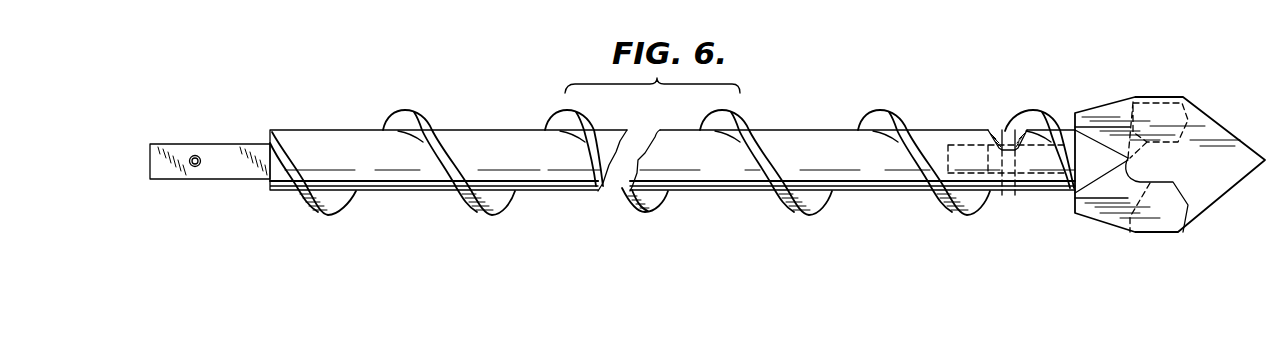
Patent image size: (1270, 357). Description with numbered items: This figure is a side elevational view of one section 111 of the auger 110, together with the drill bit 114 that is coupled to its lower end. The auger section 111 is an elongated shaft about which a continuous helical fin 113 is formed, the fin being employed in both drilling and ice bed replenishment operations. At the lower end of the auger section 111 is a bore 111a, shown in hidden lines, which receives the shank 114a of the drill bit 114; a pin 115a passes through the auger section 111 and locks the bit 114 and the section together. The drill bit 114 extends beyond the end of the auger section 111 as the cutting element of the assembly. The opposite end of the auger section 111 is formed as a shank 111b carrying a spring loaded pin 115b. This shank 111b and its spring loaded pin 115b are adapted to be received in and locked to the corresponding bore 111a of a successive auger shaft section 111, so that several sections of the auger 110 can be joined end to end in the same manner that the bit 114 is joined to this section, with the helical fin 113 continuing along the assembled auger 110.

The auger 110 is at (914, 73).
The auger section 111 is at (511, 136).
The bore 111a is at (966, 165).
The shank 111b is at (243, 146).
The continuous helical fin 113 is at (784, 210).
The drill bit 114 is at (1198, 215).
The shank of the bit 114a is at (1043, 165).
The pin 115a is at (1003, 130).
The spring loaded pin 115b is at (198, 166).